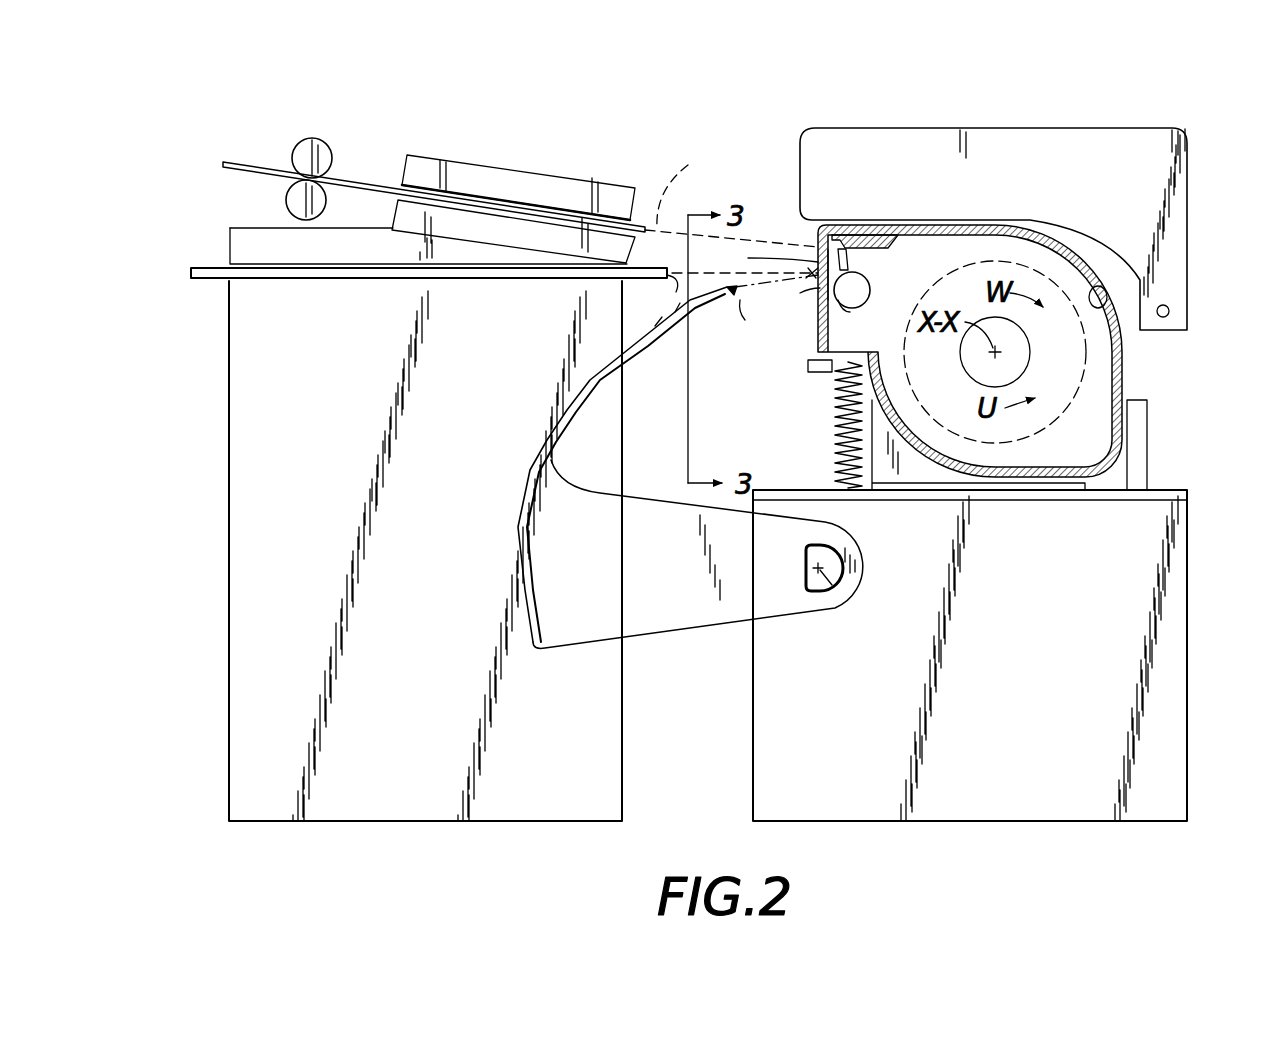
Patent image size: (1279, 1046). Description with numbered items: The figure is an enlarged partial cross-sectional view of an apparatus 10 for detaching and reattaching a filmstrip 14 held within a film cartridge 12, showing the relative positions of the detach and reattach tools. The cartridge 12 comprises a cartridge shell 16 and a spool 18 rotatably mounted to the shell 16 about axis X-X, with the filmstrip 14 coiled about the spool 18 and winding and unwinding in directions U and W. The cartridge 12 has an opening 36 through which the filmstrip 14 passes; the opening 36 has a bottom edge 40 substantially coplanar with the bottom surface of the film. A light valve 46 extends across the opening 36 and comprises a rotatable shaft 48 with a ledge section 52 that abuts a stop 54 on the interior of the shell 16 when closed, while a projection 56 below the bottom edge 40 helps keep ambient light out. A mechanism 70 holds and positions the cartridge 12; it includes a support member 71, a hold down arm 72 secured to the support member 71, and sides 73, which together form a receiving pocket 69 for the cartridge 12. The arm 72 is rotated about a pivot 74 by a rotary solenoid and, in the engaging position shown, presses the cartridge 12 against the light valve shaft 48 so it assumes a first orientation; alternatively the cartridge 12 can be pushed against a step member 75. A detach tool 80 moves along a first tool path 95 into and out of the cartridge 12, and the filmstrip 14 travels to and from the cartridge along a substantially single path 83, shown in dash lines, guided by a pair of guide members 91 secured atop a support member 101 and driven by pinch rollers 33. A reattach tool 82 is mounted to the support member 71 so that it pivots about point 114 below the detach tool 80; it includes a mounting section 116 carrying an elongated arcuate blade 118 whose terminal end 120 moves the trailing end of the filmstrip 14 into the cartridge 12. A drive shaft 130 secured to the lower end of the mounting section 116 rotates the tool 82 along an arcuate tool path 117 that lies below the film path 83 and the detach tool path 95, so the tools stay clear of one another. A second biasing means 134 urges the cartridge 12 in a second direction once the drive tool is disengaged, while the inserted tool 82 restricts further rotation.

The apparatus 10 is at (686, 114).
The film cartridge 12 is at (1025, 351).
The filmstrip 14 is at (240, 162).
The cartridge shell 16 is at (1125, 385).
The spool 18 is at (995, 352).
The pinch rollers 33 is at (312, 138).
The opening/slot 36 is at (822, 248).
The bottom edge 40 is at (792, 296).
The light valve/door 46 is at (870, 270).
The rotatable shaft 48 is at (870, 290).
The ledge section 52 is at (767, 258).
The stop 54 is at (858, 238).
The projection 56 is at (850, 312).
The receiving pocket 69 is at (1097, 285).
The mechanism 70 is at (1024, 185).
The support member 71 is at (1187, 600).
The hold down arm 72 is at (1050, 130).
The sides 73 is at (1148, 440).
The pivot 74 is at (1170, 310).
The step member 75 is at (812, 372).
The detach tool 80 is at (208, 266).
The reattach tool 82 is at (585, 655).
The path 83 is at (686, 185).
The guide members 91 is at (535, 160).
The first tool path 95 is at (652, 294).
The support member 101 is at (229, 400).
The pivot point 114 is at (846, 582).
The mounting section 116 is at (700, 640).
The tool path 117 is at (758, 300).
The arcuate blade 118 is at (600, 370).
The terminal end 120 is at (745, 320).
The drive shaft 130 is at (832, 585).
The second biasing means 134 is at (833, 420).